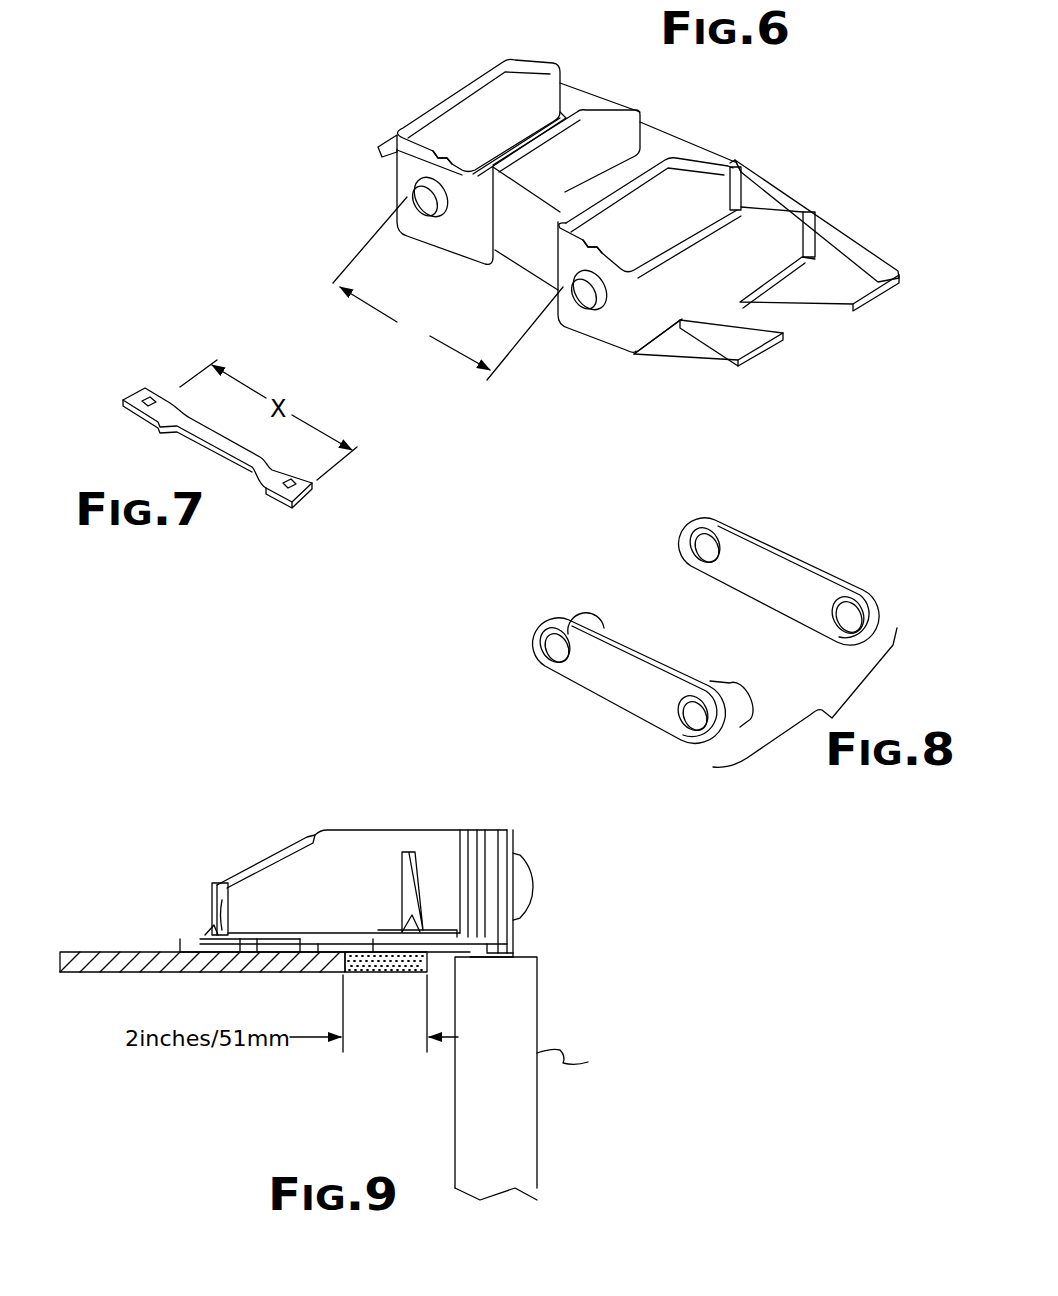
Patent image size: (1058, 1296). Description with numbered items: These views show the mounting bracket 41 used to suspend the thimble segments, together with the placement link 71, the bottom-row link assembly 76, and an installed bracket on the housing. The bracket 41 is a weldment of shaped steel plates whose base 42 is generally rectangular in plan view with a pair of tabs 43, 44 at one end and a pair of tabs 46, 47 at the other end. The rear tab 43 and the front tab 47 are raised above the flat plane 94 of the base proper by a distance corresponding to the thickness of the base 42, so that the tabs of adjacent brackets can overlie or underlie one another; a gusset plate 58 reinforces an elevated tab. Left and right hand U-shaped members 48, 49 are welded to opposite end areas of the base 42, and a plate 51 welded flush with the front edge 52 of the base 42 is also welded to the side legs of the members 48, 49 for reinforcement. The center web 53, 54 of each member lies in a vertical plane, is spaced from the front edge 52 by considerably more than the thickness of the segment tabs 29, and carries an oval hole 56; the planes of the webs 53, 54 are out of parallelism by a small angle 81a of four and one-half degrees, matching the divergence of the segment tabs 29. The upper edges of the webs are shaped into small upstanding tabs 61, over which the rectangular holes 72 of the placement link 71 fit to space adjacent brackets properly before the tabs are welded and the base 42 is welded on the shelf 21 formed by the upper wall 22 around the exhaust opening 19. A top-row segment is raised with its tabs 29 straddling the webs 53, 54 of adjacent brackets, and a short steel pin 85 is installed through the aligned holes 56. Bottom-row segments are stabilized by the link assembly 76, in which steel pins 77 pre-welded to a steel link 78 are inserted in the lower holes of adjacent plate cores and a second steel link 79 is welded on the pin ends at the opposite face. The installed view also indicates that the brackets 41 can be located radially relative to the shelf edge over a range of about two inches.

In FIG. 6, the mounting bracket 41 is at (350, 134).
In FIG. 9, the mounting bracket 41 is at (402, 826).
In FIG. 6, the base 42 is at (657, 157).
In FIG. 6, the rear tab 43 is at (850, 290).
In FIG. 6, the tab 44 is at (743, 338).
In FIG. 6, the tab 46 is at (514, 60).
In FIG. 6, the front tab 47 is at (388, 146).
In FIG. 6, the left hand U-shaped member 48 is at (390, 189).
In FIG. 6, the right hand U-shaped member 49 is at (627, 292).
In FIG. 6, the plate 51 is at (533, 228).
In FIG. 6, the front edge 52 is at (523, 273).
In FIG. 6, the center web 53 is at (407, 197).
In FIG. 6, the center web 54 is at (607, 323).
In FIG. 6, the oval hole 56 is at (432, 205).
In FIG. 6, the gusset plate 58 is at (830, 240).
In FIG. 6, the upstanding tab 61 is at (395, 172).
In FIG. 6, the angle 81a is at (447, 363).
In FIG. 7, the placement link 71 is at (195, 443).
In FIG. 7, the rectangular hole 72 is at (145, 400).
In FIG. 8, the link assembly 76 is at (613, 558).
In FIG. 8, the steel pin 77 is at (576, 613).
In FIG. 8, the steel link 78 is at (615, 673).
In FIG. 8, the steel link 79 is at (775, 548).
In FIG. 9, the exhaust opening 19 is at (430, 960).
In FIG. 9, the shelf 21 is at (316, 950).
In FIG. 9, the upper wall 22 is at (115, 950).
In FIG. 9, the segment tab 29 is at (514, 845).
In FIG. 9, the steel pin 85 is at (534, 893).
In FIG. 6, the flat plane 94 is at (773, 294).
In FIG. 9, the flat plane 94 is at (337, 953).